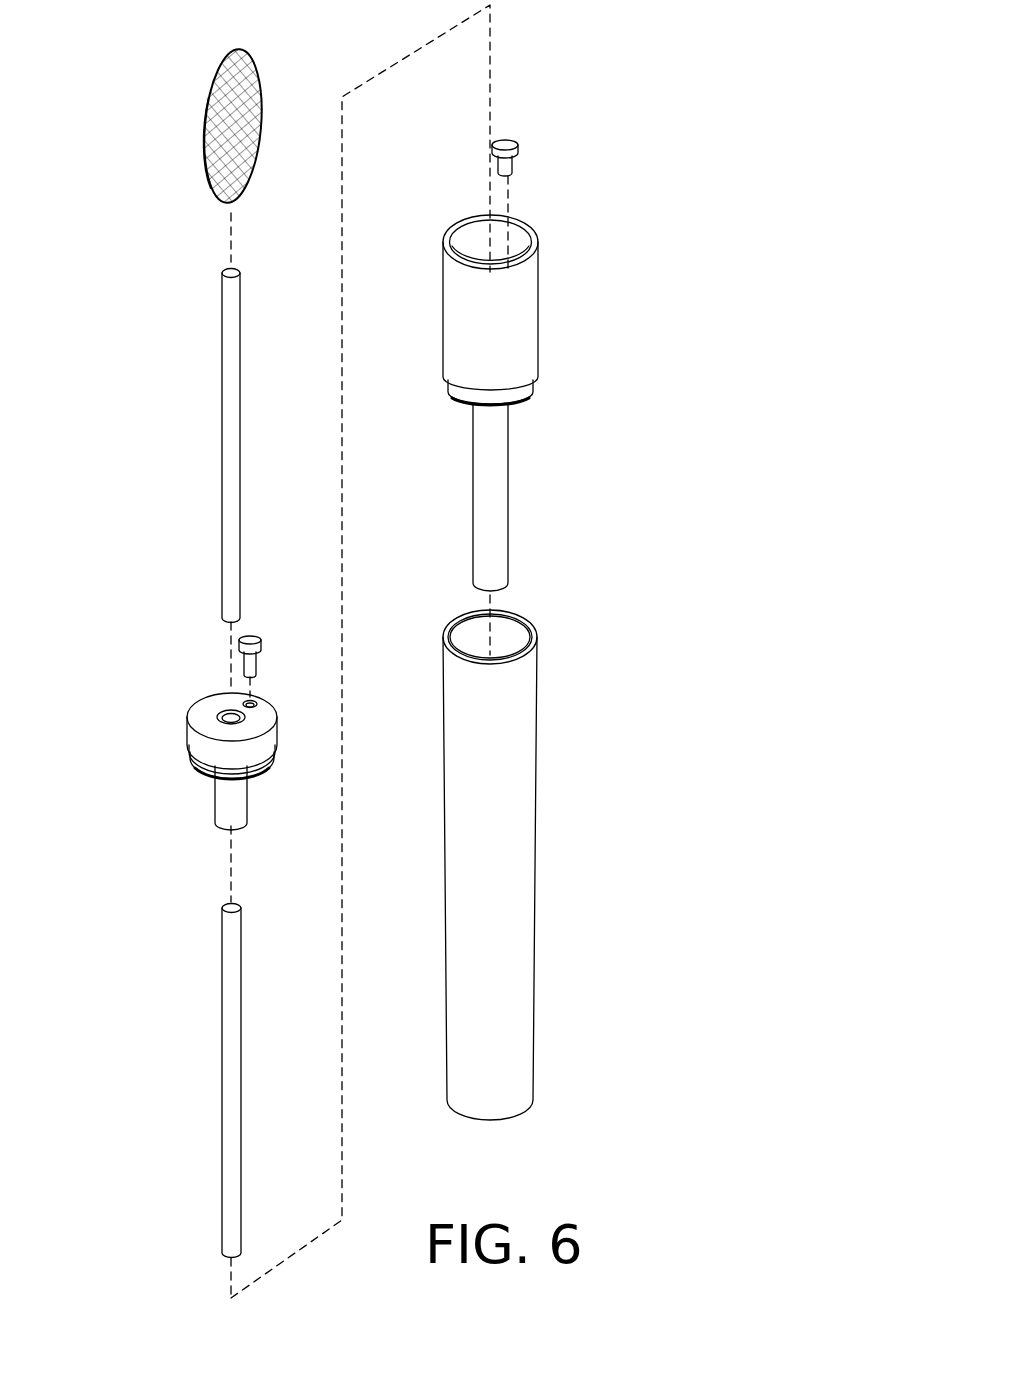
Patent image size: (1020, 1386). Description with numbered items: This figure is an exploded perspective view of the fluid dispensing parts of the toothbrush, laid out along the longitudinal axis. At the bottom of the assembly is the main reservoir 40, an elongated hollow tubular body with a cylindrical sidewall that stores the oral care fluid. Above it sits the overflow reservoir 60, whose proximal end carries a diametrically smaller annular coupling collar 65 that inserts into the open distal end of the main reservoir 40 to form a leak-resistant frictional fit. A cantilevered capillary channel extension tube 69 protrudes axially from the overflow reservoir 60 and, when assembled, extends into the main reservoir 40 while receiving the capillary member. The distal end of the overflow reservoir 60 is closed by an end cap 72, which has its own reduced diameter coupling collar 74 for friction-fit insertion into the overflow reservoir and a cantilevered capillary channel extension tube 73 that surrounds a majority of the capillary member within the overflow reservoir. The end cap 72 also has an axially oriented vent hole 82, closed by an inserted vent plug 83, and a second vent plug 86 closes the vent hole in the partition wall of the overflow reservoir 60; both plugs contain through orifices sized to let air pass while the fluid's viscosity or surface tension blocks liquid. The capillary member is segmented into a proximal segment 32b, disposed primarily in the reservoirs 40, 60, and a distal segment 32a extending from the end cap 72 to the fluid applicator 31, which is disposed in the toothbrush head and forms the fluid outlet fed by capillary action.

The fluid applicator 31 is at (228, 117).
The distal segment 32a is at (222, 422).
The proximal segment 32b is at (228, 1063).
The main reservoir 40 is at (582, 832).
The overflow reservoir 60 is at (583, 307).
The annular coupling collar 65 is at (527, 394).
The capillary channel extension tube 69 is at (506, 538).
The end cap 72 is at (215, 698).
The capillary channel extension tube 73 is at (227, 792).
The coupling collar 74 is at (210, 758).
The vent hole 82 is at (217, 716).
The vent plug 83 is at (253, 645).
The vent plug 86 is at (512, 143).